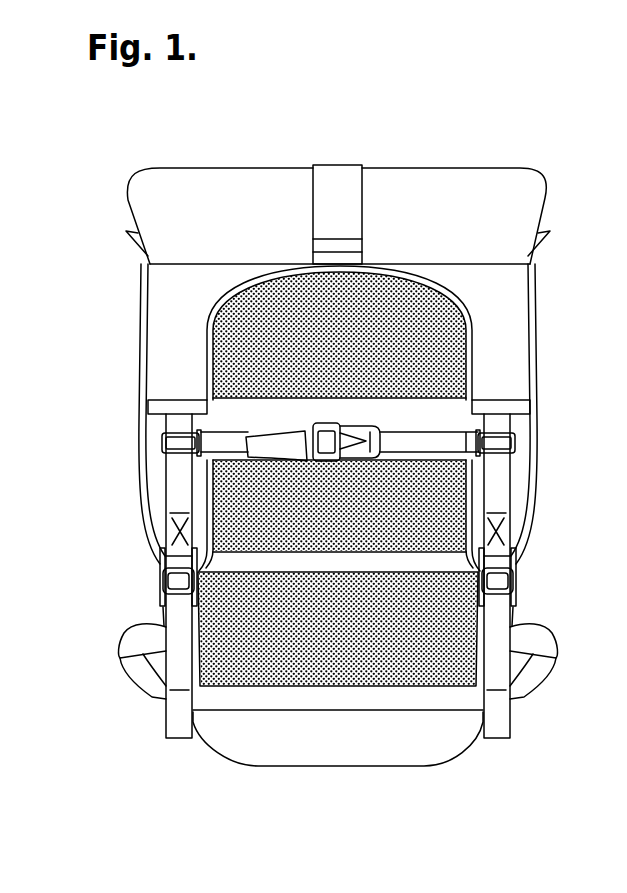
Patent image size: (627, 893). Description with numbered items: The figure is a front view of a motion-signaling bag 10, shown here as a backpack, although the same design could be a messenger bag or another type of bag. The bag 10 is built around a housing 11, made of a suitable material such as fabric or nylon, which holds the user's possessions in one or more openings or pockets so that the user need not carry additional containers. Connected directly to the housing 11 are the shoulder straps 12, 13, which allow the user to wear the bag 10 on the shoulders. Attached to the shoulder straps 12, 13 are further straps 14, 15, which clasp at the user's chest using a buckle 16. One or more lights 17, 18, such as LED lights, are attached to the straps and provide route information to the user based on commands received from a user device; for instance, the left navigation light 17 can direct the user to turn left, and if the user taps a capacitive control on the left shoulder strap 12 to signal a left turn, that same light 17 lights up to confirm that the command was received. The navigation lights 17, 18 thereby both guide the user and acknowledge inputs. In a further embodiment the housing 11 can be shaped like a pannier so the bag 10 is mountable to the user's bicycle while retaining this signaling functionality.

The motion-signaling bag 10 is at (302, 143).
The housing 11 is at (143, 420).
The left shoulder strap 12 is at (164, 497).
The shoulder strap 13 is at (513, 488).
The strap 14 is at (246, 432).
The strap 15 is at (422, 432).
The buckle 16 is at (352, 420).
The left navigation light 17 is at (170, 400).
The navigation light 18 is at (508, 400).